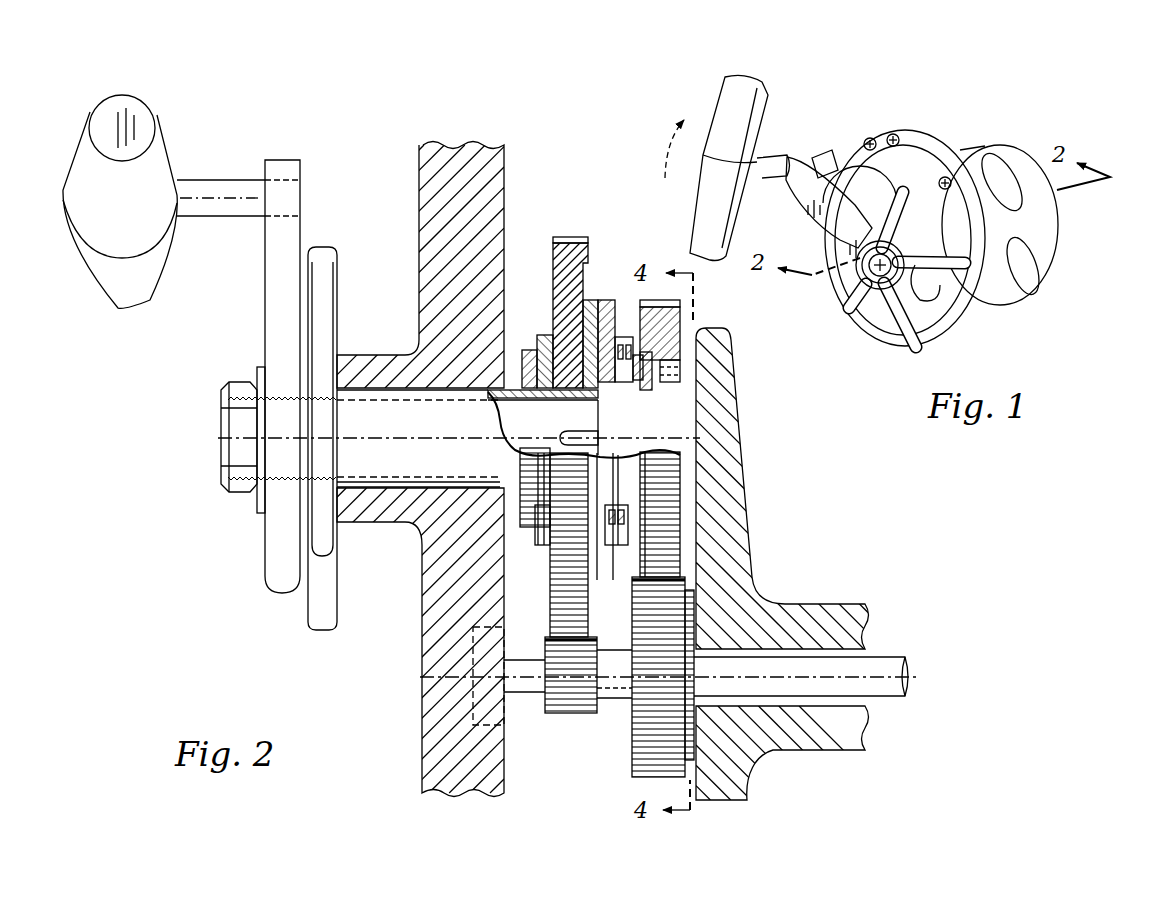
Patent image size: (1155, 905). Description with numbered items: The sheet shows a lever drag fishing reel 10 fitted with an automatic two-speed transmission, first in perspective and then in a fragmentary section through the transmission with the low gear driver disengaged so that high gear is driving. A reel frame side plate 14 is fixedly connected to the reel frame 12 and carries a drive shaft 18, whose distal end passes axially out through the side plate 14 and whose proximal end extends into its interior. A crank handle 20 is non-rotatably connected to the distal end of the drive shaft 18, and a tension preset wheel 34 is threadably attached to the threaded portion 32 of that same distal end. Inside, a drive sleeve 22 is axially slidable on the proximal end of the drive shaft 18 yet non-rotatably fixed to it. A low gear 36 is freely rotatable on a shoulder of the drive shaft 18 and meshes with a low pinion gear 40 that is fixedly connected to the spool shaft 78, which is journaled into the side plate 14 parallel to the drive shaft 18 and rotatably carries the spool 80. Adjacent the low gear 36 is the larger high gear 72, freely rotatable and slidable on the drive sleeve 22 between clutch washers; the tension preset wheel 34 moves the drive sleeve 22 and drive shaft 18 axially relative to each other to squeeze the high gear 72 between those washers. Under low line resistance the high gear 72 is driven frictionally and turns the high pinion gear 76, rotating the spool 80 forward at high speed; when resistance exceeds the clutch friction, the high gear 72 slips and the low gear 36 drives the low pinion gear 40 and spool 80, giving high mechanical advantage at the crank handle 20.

In FIG. 1, the reel 10 is at (871, 126).
In FIG. 1, the reel frame 12 is at (1040, 223).
In FIG. 2, the reel frame side plate 14 is at (472, 145).
In FIG. 1, the reel frame side plate 14 is at (910, 147).
In FIG. 2, the drive shaft 18 is at (407, 420).
In FIG. 2, the crank handle 20 is at (289, 158).
In FIG. 1, the crank handle 20 is at (862, 305).
In FIG. 2, the drive sleeve 22 is at (524, 350).
In FIG. 2, the threaded portion 32 is at (282, 477).
In FIG. 2, the tension preset wheel 34 is at (340, 247).
In FIG. 1, the tension preset wheel 34 is at (930, 350).
In FIG. 2, the low gear 36 is at (670, 300).
In FIG. 2, the low pinion gear 40 is at (633, 752).
In FIG. 2, the high gear 72 is at (570, 237).
In FIG. 2, the high pinion gear 76 is at (557, 713).
In FIG. 2, the spool shaft 78 is at (905, 655).
In FIG. 2, the spool 80 is at (757, 532).